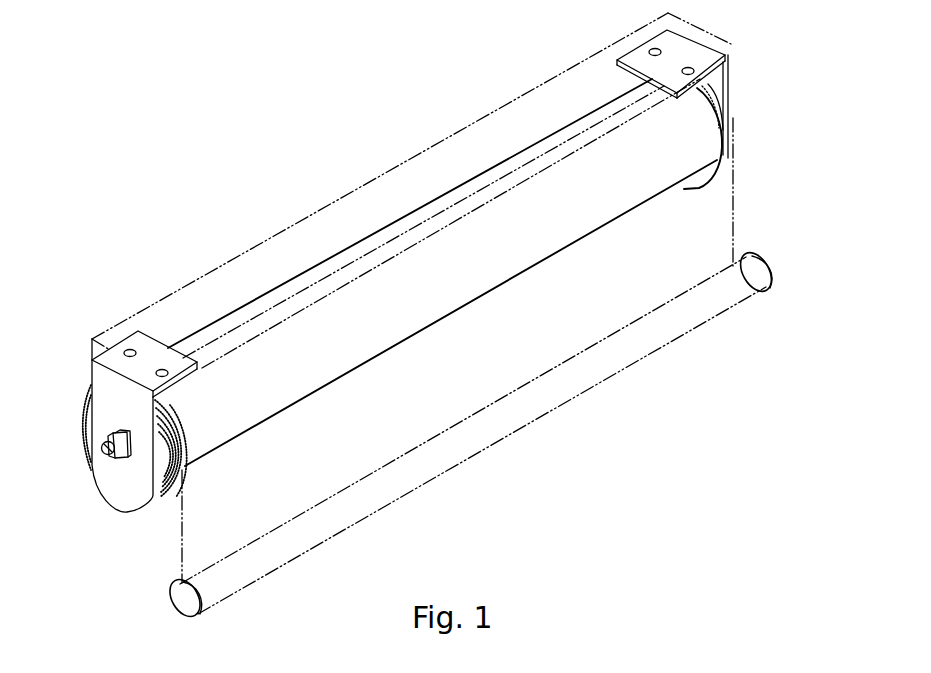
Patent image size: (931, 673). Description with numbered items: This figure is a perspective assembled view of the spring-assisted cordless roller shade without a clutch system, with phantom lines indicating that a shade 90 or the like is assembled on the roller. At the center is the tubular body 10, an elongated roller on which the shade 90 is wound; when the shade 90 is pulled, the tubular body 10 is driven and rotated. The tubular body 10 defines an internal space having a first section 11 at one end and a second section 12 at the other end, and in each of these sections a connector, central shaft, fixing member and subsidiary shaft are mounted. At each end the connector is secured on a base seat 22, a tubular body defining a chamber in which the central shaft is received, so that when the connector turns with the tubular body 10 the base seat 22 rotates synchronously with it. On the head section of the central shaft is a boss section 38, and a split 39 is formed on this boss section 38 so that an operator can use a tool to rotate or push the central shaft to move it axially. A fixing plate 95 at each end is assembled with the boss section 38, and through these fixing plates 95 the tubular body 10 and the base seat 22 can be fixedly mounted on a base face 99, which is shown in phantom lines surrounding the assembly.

The tubular body 10 is at (423, 202).
The first section 11 is at (667, 172).
The second section 12 is at (213, 461).
The base seat 22 is at (727, 125).
The boss section 38 is at (127, 460).
The split 39 is at (101, 451).
The shade 90 is at (520, 373).
The fixing plate 95 is at (102, 388).
The base face 99 is at (313, 212).